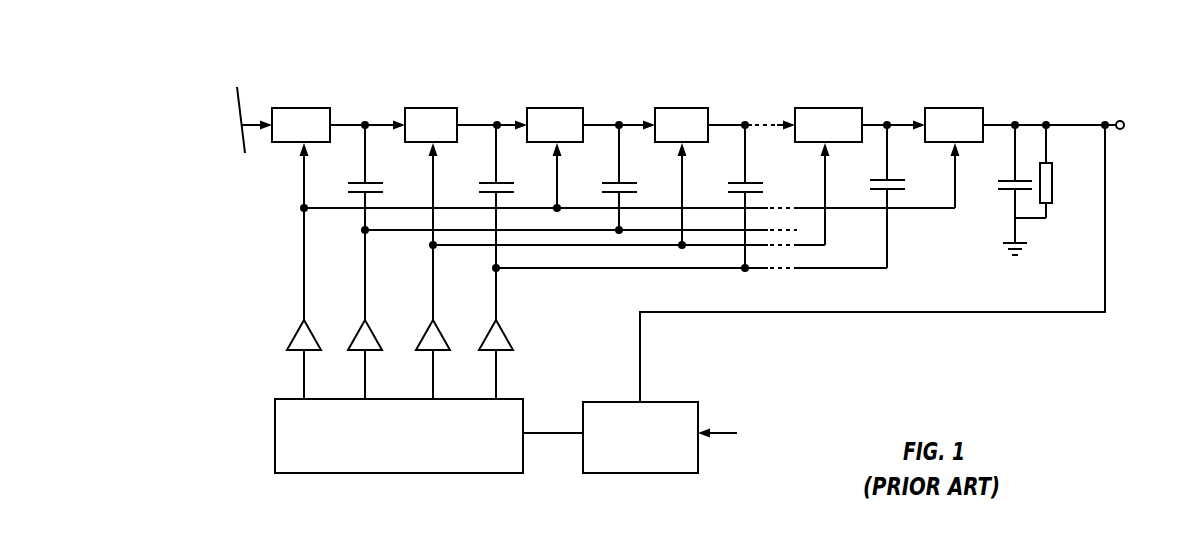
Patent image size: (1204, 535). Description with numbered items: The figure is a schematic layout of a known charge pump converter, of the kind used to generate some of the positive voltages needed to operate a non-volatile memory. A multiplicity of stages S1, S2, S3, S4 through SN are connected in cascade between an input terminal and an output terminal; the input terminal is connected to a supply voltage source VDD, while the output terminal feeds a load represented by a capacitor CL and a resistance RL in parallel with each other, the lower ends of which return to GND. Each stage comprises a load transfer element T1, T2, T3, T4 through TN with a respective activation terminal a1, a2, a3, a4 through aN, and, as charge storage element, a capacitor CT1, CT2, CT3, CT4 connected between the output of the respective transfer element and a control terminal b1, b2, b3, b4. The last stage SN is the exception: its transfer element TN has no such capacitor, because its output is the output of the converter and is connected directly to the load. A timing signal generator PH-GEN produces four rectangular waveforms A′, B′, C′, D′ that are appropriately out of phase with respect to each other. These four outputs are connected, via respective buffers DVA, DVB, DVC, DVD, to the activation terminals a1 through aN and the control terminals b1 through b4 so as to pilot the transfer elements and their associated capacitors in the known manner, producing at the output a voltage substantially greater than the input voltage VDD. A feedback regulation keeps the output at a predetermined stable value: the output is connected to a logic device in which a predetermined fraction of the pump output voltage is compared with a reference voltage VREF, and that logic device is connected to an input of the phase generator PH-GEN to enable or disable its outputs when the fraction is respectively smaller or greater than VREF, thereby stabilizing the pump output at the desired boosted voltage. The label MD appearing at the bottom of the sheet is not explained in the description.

The supply voltage source VDD is at (258, 87).
The load transfer element T1 is at (301, 125).
The load transfer element T2 is at (431, 125).
The load transfer element T3 is at (555, 125).
The load transfer element T4 is at (681, 125).
The load transfer element TN is at (954, 125).
The stage S1 is at (352, 114).
The stage S2 is at (482, 114).
The stage S3 is at (602, 114).
The stage S4 is at (732, 114).
The last stage SN is at (1004, 114).
The activation terminal a1 is at (302, 160).
The activation terminal a2 is at (431, 175).
The activation terminal a3 is at (556, 175).
The activation terminal a4 is at (681, 175).
The activation terminal aN is at (954, 176).
The capacitor CT1 is at (347, 188).
The capacitor CT2 is at (478, 188).
The capacitor CT3 is at (601, 188).
The capacitor CT4 is at (727, 188).
The control terminal b1 is at (370, 205).
The control terminal b2 is at (500, 205).
The control terminal b3 is at (622, 205).
The control terminal b4 is at (749, 205).
The capacitor CL is at (997, 185).
The resistance RL is at (1053, 183).
The ground GND is at (1038, 267).
The buffer DVA is at (296, 334).
The buffer DVB is at (355, 337).
The buffer DVC is at (424, 337).
The buffer DVD is at (490, 337).
The rectangular waveform A′ is at (302, 388).
The rectangular waveform B′ is at (364, 388).
The rectangular waveform C′ is at (430, 388).
The rectangular waveform D′ is at (494, 388).
The timing signal generator PH-GEN is at (429, 436).
The reference voltage VREF is at (737, 438).
The charge pump circuit MD is at (759, 530).